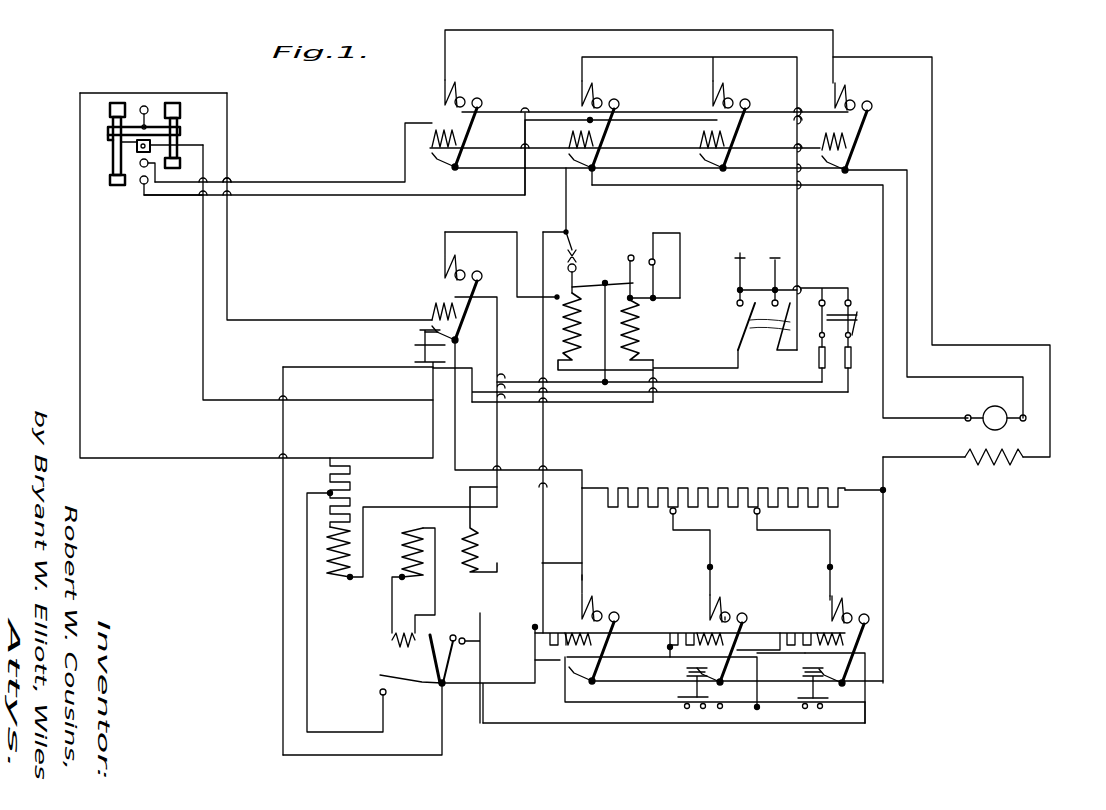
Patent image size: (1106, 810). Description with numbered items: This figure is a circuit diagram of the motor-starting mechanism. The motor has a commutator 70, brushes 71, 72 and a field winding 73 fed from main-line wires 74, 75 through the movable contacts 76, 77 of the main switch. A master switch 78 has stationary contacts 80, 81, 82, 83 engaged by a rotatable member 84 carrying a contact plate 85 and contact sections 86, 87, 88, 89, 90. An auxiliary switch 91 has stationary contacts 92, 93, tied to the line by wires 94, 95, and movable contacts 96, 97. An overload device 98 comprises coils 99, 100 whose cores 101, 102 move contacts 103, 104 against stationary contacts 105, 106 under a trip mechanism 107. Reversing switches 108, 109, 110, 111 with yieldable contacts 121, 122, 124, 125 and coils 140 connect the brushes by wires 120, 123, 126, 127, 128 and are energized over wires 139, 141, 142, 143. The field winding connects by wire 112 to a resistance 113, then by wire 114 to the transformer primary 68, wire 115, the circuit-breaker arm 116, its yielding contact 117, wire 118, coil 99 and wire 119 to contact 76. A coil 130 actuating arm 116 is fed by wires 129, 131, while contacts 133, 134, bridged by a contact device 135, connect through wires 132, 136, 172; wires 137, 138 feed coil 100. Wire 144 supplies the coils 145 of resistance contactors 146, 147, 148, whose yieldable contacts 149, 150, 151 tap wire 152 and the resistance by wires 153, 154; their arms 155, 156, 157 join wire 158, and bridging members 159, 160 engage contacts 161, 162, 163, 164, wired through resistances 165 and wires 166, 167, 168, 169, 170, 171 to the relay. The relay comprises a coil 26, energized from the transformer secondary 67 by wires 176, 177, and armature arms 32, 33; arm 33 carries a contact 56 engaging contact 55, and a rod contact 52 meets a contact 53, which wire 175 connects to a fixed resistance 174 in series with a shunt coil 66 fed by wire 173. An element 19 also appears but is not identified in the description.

The contact 19 is at (142, 184).
The coil 26 is at (392, 640).
The lever arm 32 is at (410, 668).
The lever arm 33 is at (449, 659).
The contact 52 is at (385, 686).
The contact 53 is at (380, 692).
The contact-member 55 is at (482, 628).
The contact 56 is at (452, 634).
The shunt coil 66 is at (327, 549).
The secondary 67 is at (402, 535).
The primary winding 68 is at (478, 538).
The commutator 70 is at (1005, 412).
The brush 71 is at (965, 415).
The brush 72 is at (1010, 425).
The field-winding 73 is at (992, 465).
The main-line wire 74 is at (733, 262).
The main-line wire 75 is at (776, 258).
The movable contact 76 is at (748, 312).
The movable contact 77 is at (750, 322).
The master-switch 78 is at (153, 158).
The stationary contact 80 is at (150, 143).
The stationary contact 81 is at (140, 163).
The stationary contact 82 is at (145, 106).
The stationary contact 83 is at (144, 106).
The rotatable contact-equipped member 84 is at (108, 136).
The contact plate 85 is at (108, 129).
The contact section 86 is at (110, 180).
The contact section 87 is at (114, 103).
The contact section 88 is at (180, 108).
The contact section 89 is at (180, 163).
The contact section 90 is at (121, 142).
The auxiliary switch 91 is at (832, 353).
The stationary contact 92 is at (825, 298).
The stationary contact 93 is at (851, 298).
The wire 94 is at (748, 288).
The wire 95 is at (812, 288).
The movable contact 96 is at (828, 319).
The movable contact 97 is at (861, 358).
The over-load-protection device 98 is at (602, 320).
The solenoid coil 99 is at (560, 330).
The solenoid coil 100 is at (640, 318).
The core 101 is at (568, 268).
The core 102 is at (640, 298).
The contact 103 is at (576, 252).
The contact 104 is at (628, 258).
The stationary contact 105 is at (543, 232).
The stationary contact 106 is at (650, 258).
The trip-mechanism 107 is at (630, 295).
The reversing switch 108 is at (478, 133).
The reversing switch 109 is at (603, 130).
The reversing switch 110 is at (740, 136).
The reversing switch 111 is at (866, 138).
The wire 112 is at (920, 457).
The resistance 113 is at (780, 488).
The wire 114 is at (584, 478).
The wire 115 is at (585, 522).
The movable contact arm 116 is at (890, 706).
The yielding contact 117 is at (440, 285).
The wire 118 is at (445, 238).
The wire 119 is at (693, 368).
The wire 120 is at (500, 168).
The yieldable contact 121 is at (600, 98).
The yieldable contact 122 is at (465, 98).
The wire 123 is at (768, 168).
The yieldable contact member 124 is at (730, 98).
The yieldable contact member 125 is at (852, 100).
The wire 126 is at (488, 30).
The wire 127 is at (898, 50).
The wire 128 is at (675, 54).
The wire 129 is at (520, 382).
The coil 130 is at (432, 300).
The wire 131 is at (288, 320).
The wire 132 is at (825, 392).
The contact 133 is at (425, 365).
The contact 134 is at (400, 367).
The contact device 135 is at (420, 335).
The wire 136 is at (160, 458).
The wire 137 is at (255, 400).
The wire 138 is at (680, 245).
The wire 139 is at (318, 182).
The coil 140 is at (435, 130).
The wire 141 is at (320, 195).
The wire 142 is at (650, 168).
The wire 143 is at (566, 212).
The wire 144 is at (547, 440).
The coil 145 is at (578, 632).
The resistance contactor 146 is at (592, 672).
The resistance contactor 147 is at (687, 672).
The resistance contactor 148 is at (865, 666).
The yieldable contact 149 is at (600, 612).
The yieldable contact 150 is at (728, 612).
The yieldable contact 151 is at (842, 598).
The wire 152 is at (583, 578).
The wire 153 is at (710, 548).
The wire 154 is at (830, 552).
The movable contact arm 155 is at (616, 616).
The movable contact arm 156 is at (744, 616).
The movable contact arm 157 is at (866, 622).
The wire 158 is at (883, 552).
The bridging contact member 159 is at (682, 708).
The bridging contact member 160 is at (800, 700).
The contact 161 is at (700, 710).
The contact 162 is at (722, 712).
The contact 163 is at (805, 710).
The contact 164 is at (822, 712).
The resistance 165 is at (758, 642).
The wire 166 is at (675, 633).
The wire 167 is at (757, 668).
The wire 168 is at (535, 660).
The wire 169 is at (770, 695).
The wire 170 is at (865, 725).
The wire 171 is at (643, 657).
The wire 172 is at (283, 678).
The wire 173 is at (497, 325).
The resistance 174 is at (335, 458).
The wire 175 is at (307, 630).
The wire 176 is at (392, 614).
The wire 177 is at (435, 592).